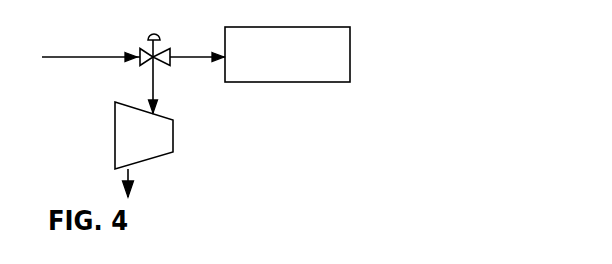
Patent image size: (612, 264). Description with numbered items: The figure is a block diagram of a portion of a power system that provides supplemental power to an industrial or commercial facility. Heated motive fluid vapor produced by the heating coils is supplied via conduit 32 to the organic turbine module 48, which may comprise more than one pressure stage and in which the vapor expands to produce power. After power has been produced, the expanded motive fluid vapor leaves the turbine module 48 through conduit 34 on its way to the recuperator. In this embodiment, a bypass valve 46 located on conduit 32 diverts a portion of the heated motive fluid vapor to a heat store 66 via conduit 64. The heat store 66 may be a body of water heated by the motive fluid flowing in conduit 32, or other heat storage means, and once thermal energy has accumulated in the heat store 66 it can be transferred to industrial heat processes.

The conduit 32 is at (72, 57).
The bypass valve 46 is at (156, 32).
The conduit 64 is at (174, 57).
The heat store 66 is at (332, 27).
The organic turbine module 48 is at (162, 117).
The conduit 34 is at (130, 171).